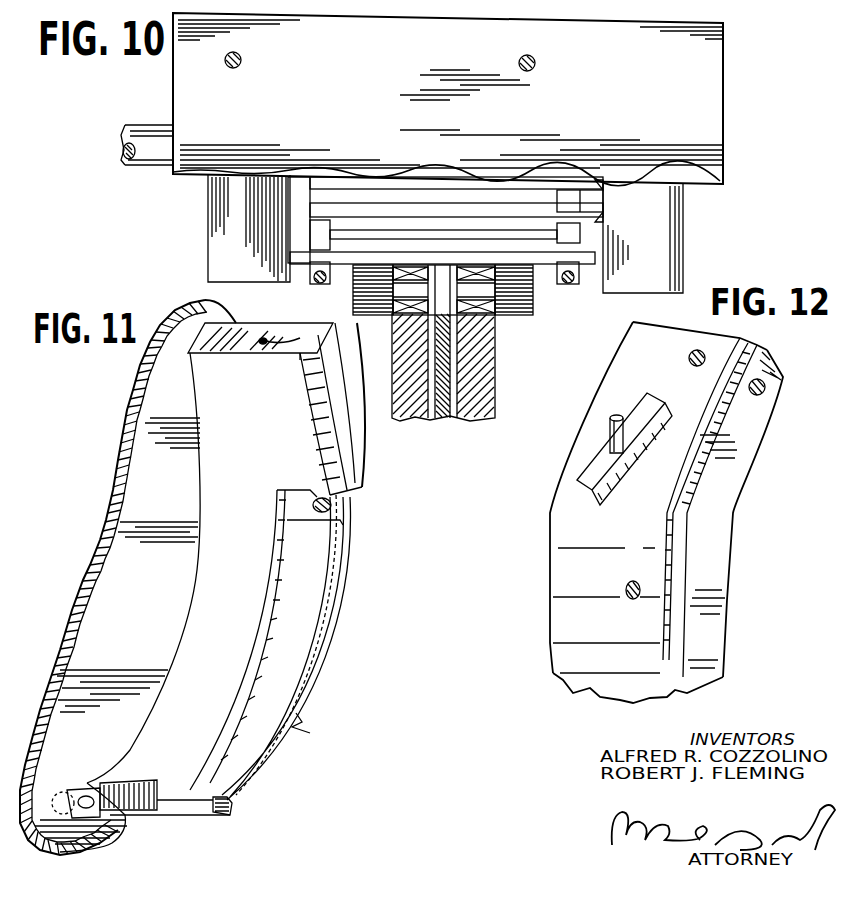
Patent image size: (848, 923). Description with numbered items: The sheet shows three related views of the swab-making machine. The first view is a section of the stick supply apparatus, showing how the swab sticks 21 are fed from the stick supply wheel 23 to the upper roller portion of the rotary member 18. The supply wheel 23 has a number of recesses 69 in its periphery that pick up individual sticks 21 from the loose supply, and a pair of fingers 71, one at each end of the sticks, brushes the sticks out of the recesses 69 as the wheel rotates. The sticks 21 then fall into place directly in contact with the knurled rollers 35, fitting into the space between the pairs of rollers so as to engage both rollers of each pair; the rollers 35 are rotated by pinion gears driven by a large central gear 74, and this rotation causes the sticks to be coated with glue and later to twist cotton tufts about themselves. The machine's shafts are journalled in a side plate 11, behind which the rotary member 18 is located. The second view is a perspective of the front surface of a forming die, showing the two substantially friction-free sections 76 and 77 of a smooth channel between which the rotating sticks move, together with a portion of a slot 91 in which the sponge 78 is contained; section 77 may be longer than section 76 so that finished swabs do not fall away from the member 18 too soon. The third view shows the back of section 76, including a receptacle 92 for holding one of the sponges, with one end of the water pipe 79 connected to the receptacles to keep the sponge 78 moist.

In FIG. 11, the side plate 11 is at (100, 553).
In FIG. 10, the rotary member 18 is at (503, 361).
In FIG. 10, the swab sticks 21 is at (387, 257).
In FIG. 10, the stick supply wheel 23 is at (513, 200).
In FIG. 10, the rollers 35 is at (367, 292).
In FIG. 10, the recesses 69 is at (603, 192).
In FIG. 10, the fingers 71 is at (318, 232).
In FIG. 10, the large central gear 74 is at (440, 410).
In FIG. 11, the channel section 76 is at (263, 340).
In FIG. 11, the channel section 77 is at (300, 338).
In FIG. 12, the channel section 77 is at (567, 518).
In FIG. 11, the sponge 78 is at (333, 505).
In FIG. 12, the water pipe 79 is at (608, 425).
In FIG. 11, the slot 91 is at (322, 512).
In FIG. 12, the receptacle 92 is at (590, 476).